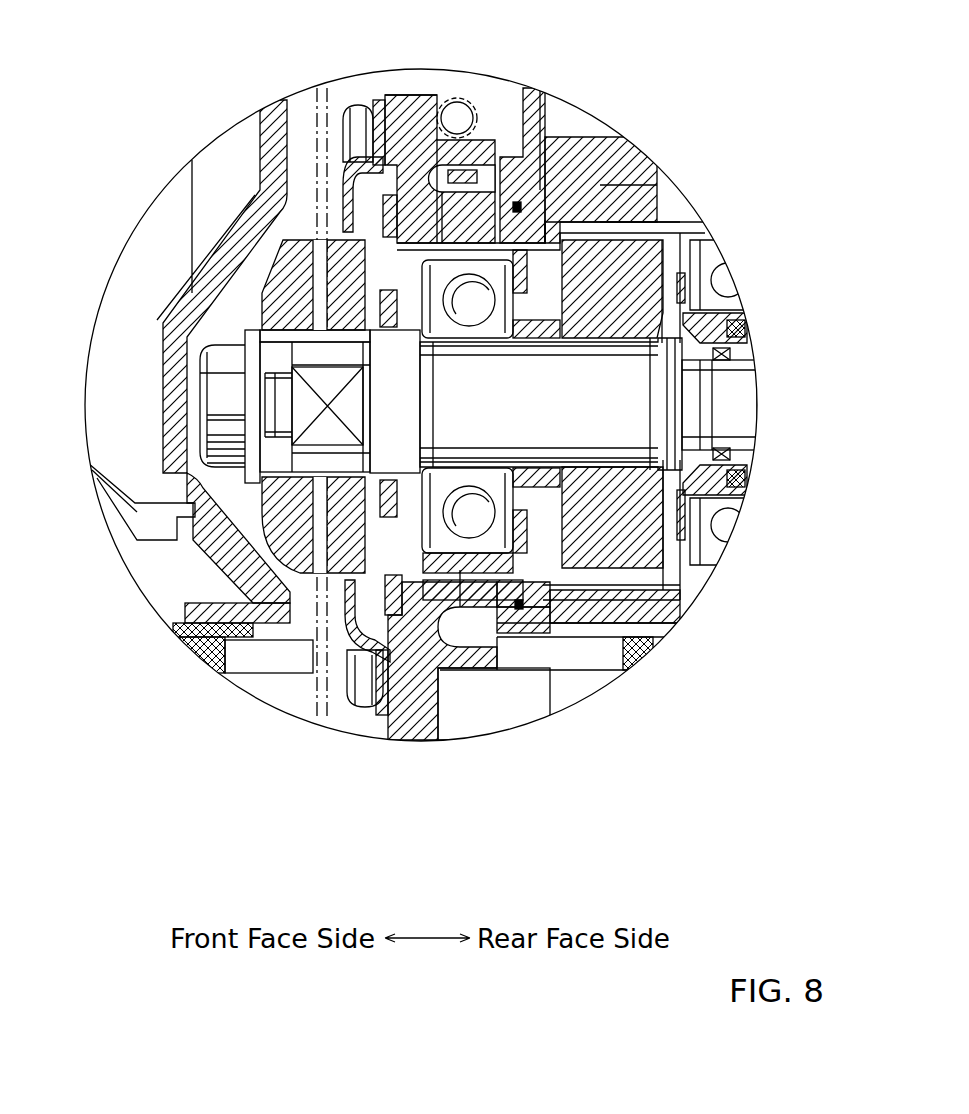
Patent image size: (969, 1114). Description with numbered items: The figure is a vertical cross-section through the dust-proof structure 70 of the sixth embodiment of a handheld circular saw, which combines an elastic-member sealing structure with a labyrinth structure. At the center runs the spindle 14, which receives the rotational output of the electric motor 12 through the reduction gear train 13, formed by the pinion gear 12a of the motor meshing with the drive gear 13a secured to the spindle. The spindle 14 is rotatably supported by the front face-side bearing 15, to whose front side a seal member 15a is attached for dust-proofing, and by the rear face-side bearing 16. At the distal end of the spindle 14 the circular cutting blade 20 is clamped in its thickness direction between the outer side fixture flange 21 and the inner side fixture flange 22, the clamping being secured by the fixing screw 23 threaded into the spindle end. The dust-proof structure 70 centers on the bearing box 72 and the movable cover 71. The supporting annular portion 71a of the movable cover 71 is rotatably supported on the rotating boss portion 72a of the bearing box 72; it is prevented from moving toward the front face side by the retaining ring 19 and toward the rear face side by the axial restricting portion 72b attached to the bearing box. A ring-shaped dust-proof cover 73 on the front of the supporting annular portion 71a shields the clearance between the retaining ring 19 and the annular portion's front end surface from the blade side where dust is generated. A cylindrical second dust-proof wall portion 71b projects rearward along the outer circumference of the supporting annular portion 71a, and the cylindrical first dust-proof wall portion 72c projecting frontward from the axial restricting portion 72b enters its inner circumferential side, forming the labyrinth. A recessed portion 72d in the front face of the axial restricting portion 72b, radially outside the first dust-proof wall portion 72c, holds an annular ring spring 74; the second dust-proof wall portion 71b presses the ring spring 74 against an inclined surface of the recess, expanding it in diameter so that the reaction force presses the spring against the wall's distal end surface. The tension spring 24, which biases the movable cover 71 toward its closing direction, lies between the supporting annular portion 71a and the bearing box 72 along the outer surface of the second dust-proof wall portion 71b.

The electric motor 12 is at (671, 344).
The pinion gear 12a is at (600, 152).
The reduction gear train 13 is at (642, 642).
The drive gear 13a is at (613, 530).
The spindle 14 is at (607, 400).
The bearing 15 is at (475, 512).
The seal member 15a is at (398, 300).
The bearing 16 is at (743, 453).
The retaining ring 19 is at (347, 203).
The cutting blade 20 is at (322, 692).
The outer side fixture flange 21 is at (285, 280).
The inner side fixture flange 22 is at (267, 530).
The fixing screw 23 is at (218, 403).
The tension spring 24 is at (455, 96).
The dust-proof structure 70 is at (485, 100).
The movable cover 71 is at (422, 707).
The supporting annular portion 71a is at (560, 195).
The second dust-proof wall portion 71b is at (442, 237).
The bearing box 72 is at (640, 230).
The rotating boss portion 72a is at (408, 150).
The axial restricting portion 72b is at (596, 148).
The first dust-proof wall portion 72c is at (421, 95).
The recessed portion 72d is at (515, 150).
The dust-proof cover 73 is at (383, 212).
The ring spring 74 is at (507, 147).